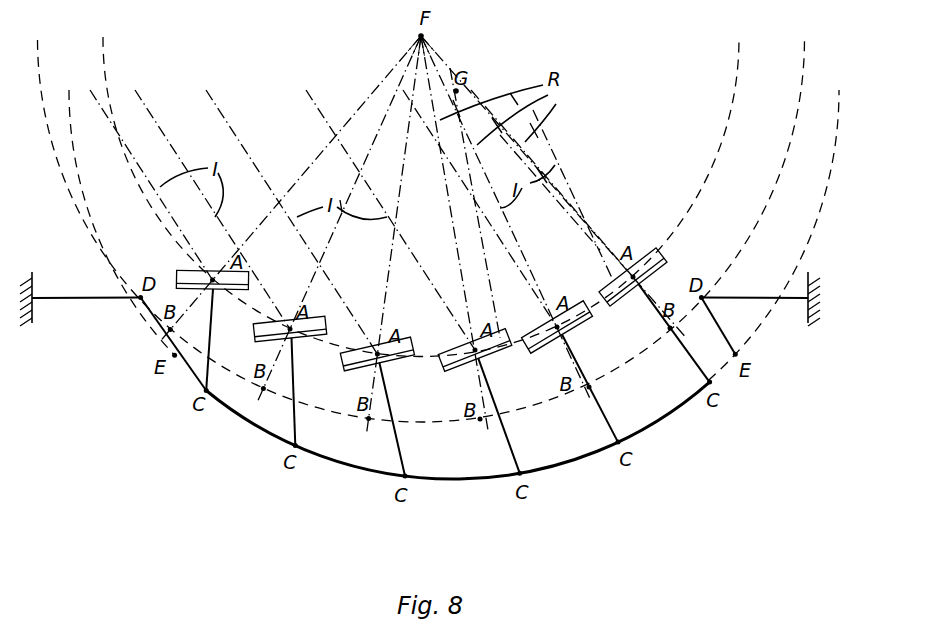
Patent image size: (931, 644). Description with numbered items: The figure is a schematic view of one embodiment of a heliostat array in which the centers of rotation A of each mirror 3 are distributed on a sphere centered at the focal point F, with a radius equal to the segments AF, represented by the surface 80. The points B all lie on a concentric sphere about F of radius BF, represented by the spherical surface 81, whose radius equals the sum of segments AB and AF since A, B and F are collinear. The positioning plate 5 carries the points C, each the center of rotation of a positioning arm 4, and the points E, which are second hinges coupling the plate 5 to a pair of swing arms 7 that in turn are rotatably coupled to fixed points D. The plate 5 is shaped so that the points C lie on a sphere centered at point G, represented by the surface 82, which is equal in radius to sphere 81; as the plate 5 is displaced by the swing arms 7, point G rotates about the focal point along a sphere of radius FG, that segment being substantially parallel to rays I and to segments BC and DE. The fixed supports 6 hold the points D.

The mirror 3 is at (656, 248).
The positioning arm 4 is at (498, 398).
The positioning plate 5 is at (568, 465).
The fixed support arm 6 is at (752, 297).
The swing arm 7 is at (820, 377).
The surface 80 is at (110, 82).
The spherical surface 81 is at (47, 85).
The surface 82 is at (80, 177).